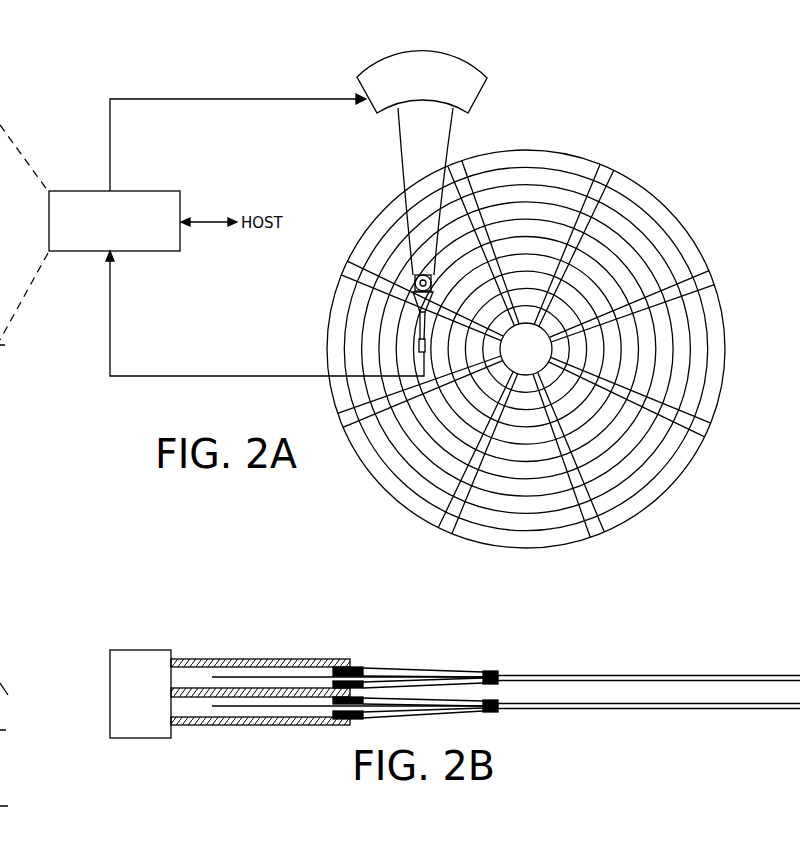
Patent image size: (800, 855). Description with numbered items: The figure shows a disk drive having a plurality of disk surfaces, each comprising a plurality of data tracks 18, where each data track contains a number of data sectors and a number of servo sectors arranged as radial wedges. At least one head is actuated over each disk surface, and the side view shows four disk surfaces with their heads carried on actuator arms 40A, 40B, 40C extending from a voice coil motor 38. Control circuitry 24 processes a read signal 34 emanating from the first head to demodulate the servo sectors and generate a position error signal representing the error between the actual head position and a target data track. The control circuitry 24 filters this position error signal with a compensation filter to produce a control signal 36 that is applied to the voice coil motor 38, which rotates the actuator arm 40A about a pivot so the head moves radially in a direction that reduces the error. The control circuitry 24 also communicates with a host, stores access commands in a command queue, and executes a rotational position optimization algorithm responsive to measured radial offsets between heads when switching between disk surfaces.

In FIG. 2A, the data tracks 18 is at (531, 180).
In FIG. 2A, the control circuitry 24 is at (148, 191).
In FIG. 2A, the read signal 34 is at (208, 376).
In FIG. 2A, the control signal 36 is at (110, 152).
In FIG. 2A, the voice coil motor 38 is at (372, 102).
In FIG. 2B, the voice coil motor 38 is at (143, 650).
In FIG. 2A, the actuator arm 40A is at (405, 178).
In FIG. 2B, the actuator arm 40A is at (243, 659).
In FIG. 2B, the actuator arm 40B is at (262, 688).
In FIG. 2B, the actuator arm 40C is at (296, 717).